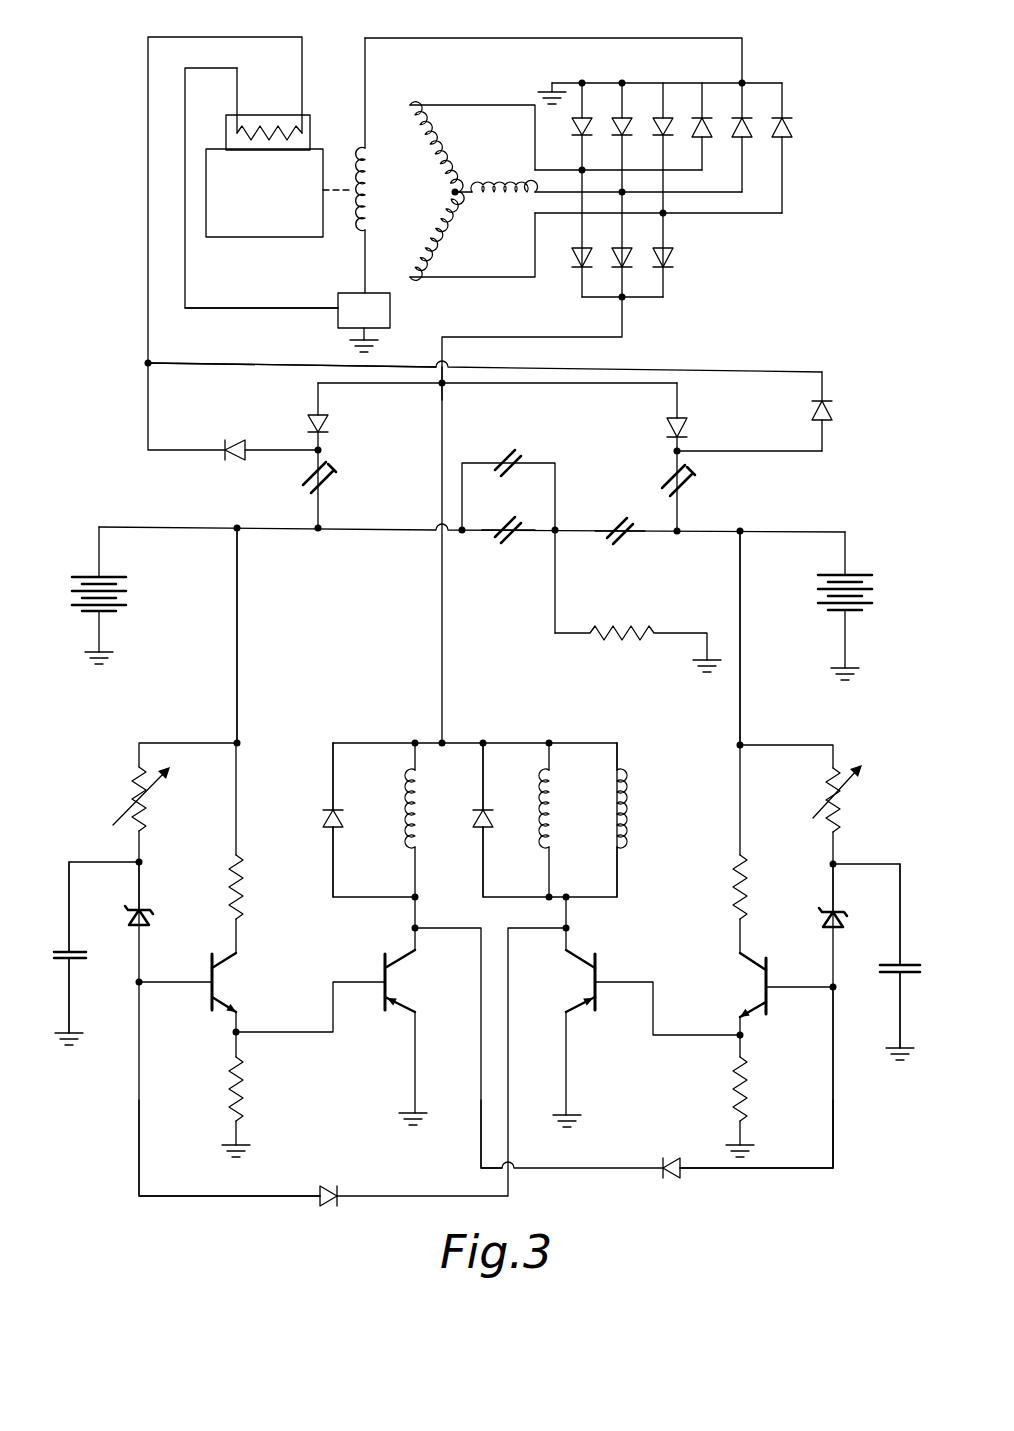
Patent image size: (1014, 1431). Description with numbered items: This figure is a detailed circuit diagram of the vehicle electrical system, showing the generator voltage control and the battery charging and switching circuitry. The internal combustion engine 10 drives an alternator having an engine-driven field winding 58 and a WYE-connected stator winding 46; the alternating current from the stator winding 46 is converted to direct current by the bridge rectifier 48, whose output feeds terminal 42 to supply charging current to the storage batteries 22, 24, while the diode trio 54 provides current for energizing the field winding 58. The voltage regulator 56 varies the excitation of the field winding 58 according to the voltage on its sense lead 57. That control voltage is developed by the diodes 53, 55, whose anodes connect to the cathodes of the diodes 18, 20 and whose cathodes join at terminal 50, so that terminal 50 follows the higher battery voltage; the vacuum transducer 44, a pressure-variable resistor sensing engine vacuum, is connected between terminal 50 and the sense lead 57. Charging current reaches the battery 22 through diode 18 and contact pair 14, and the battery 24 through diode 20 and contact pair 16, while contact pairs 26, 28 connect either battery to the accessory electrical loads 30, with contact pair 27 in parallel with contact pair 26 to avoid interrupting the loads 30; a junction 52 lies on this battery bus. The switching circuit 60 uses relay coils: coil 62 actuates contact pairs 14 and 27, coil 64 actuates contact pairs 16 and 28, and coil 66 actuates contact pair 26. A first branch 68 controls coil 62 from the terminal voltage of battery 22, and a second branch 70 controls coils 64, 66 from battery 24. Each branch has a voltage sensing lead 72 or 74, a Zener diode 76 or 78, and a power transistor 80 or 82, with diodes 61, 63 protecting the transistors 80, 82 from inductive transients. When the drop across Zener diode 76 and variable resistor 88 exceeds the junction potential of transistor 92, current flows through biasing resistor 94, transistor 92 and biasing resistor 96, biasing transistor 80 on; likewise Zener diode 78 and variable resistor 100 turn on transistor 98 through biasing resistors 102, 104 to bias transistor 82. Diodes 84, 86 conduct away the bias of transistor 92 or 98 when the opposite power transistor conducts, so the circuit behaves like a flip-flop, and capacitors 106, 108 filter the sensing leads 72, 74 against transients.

The internal combustion engine 10 is at (275, 228).
The contact pair 14 is at (330, 480).
The contact pair 16 is at (690, 480).
The diode 18 is at (330, 425).
The diode 20 is at (690, 425).
The storage battery 22 is at (95, 575).
The storage battery 24 is at (855, 575).
The contact pair 26 is at (512, 542).
The contact pair 27 is at (508, 452).
The contact pair 28 is at (617, 518).
The electrical loads 30 is at (625, 628).
The terminal 42 is at (442, 386).
The vacuum transducer 44 is at (310, 128).
The stator winding 46 is at (488, 162).
The bridge rectifier 48 is at (649, 77).
The terminal 50 is at (150, 366).
The junction 52 is at (557, 535).
The diode 53 is at (237, 460).
The diode trio 54 is at (793, 113).
The diode 55 is at (835, 405).
The voltage regulator 56 is at (392, 312).
The sense lead 57 is at (283, 308).
The field winding 58 is at (372, 202).
The switching circuit 60 is at (446, 1211).
The diode 61 is at (340, 808).
The coil 62 is at (418, 822).
The diode 63 is at (490, 812).
The coil 64 is at (552, 835).
The coil 66 is at (627, 830).
The first branch 68 is at (255, 1220).
The second branch 70 is at (758, 1195).
The voltage sensing lead 72 is at (240, 580).
The voltage sensing lead 74 is at (743, 583).
The Zener diode 76 is at (150, 920).
The Zener diode 78 is at (825, 920).
The power transistor 80 is at (392, 996).
The power transistor 82 is at (600, 972).
The diode 84 is at (328, 1188).
The diode 86 is at (676, 1160).
The resistor 88 is at (150, 822).
The transistor 92 is at (215, 988).
The biasing resistor 94 is at (240, 892).
The biasing resistor 96 is at (240, 1100).
The transistor 98 is at (762, 992).
The resistor 100 is at (845, 812).
The biasing resistor 102 is at (735, 882).
The biasing resistor 104 is at (745, 1102).
The capacitor 106 is at (80, 960).
The capacitor 108 is at (905, 962).